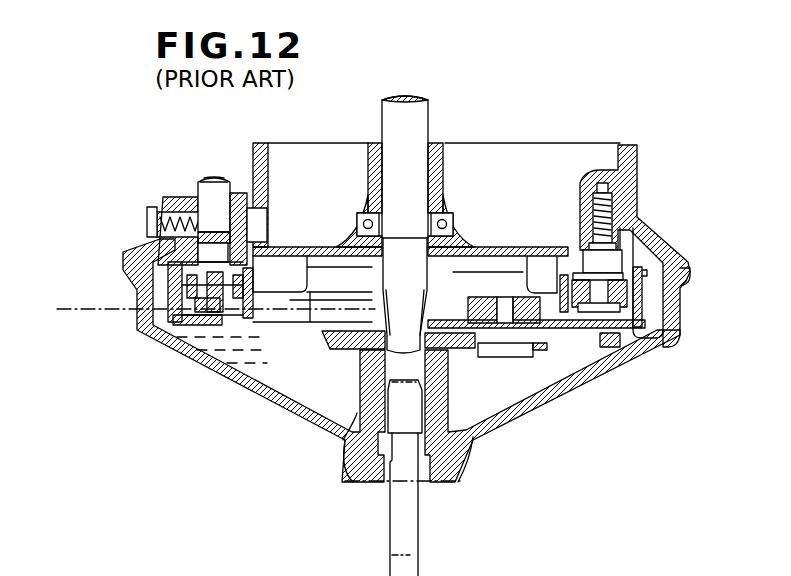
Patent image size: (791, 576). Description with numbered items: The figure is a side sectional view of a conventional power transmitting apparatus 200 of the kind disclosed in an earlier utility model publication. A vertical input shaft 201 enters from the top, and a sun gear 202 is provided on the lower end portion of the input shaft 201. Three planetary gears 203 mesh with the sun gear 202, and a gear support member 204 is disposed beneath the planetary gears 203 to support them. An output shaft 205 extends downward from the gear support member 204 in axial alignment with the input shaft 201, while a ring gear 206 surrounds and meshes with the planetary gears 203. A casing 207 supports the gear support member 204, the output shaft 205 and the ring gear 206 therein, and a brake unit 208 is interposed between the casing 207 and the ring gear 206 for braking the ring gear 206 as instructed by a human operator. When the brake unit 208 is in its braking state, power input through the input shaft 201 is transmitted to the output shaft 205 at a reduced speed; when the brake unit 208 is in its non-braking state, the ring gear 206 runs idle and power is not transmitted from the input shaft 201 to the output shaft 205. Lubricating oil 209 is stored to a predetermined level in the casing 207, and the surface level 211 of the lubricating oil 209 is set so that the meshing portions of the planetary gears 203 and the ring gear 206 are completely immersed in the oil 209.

The power transmitting apparatus 200 is at (160, 152).
The input shaft 201 is at (421, 133).
The sun gear 202 is at (428, 312).
The planetary gears 203 is at (575, 333).
The gear support member 204 is at (462, 357).
The output shaft 205 is at (418, 498).
The ring gear 206 is at (605, 333).
The casing 207 is at (238, 405).
The brake unit 208 is at (637, 245).
The lubricating oil 209 is at (200, 350).
The surface level 211 is at (80, 308).